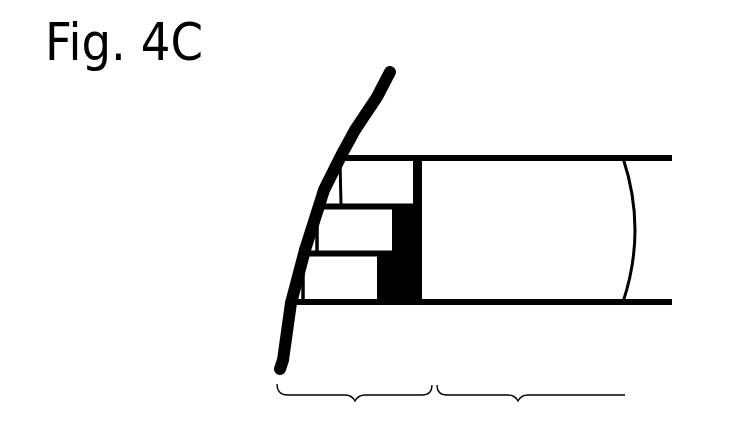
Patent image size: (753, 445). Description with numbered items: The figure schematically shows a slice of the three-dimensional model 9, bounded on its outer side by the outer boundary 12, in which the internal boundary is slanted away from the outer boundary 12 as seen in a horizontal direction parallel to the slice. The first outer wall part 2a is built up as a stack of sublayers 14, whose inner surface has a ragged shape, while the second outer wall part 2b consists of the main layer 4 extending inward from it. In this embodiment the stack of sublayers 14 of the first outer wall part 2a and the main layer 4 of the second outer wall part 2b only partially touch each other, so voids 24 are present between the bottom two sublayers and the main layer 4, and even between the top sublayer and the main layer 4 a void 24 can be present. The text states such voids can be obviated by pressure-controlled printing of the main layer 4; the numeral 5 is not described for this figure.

The main layer 4 is at (507, 140).
The 3D model 9 is at (362, 80).
The outer boundary 12 is at (279, 340).
The cells / chambers 5 is at (348, 273).
The stack of sublayers 14 is at (378, 146).
The voids 24 is at (416, 158).
The first outer wall part 2a is at (354, 408).
The second outer wall part 2b is at (531, 408).